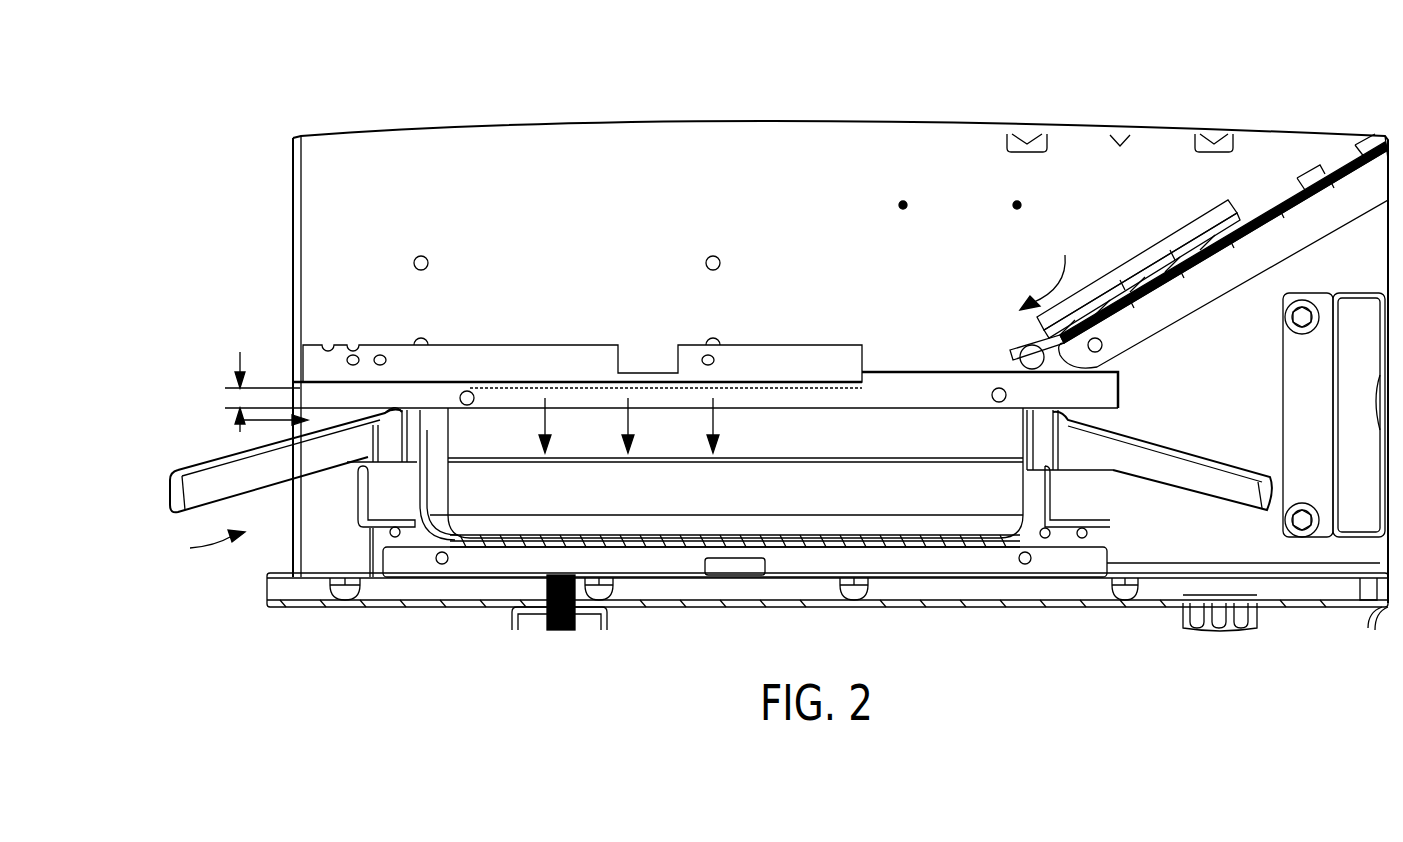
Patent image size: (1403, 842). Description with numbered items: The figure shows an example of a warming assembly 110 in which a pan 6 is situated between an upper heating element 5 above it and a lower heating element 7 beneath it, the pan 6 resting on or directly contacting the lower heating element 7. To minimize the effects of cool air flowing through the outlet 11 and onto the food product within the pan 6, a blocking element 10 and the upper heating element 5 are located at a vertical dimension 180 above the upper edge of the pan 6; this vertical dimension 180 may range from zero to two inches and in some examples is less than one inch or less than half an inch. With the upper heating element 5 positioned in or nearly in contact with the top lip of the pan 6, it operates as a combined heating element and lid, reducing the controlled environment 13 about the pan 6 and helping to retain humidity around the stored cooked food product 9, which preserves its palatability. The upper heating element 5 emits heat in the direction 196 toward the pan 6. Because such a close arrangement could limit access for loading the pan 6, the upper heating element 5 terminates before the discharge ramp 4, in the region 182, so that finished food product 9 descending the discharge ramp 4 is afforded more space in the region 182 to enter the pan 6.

The warming assembly 110 is at (190, 152).
The blocking element 10 is at (297, 262).
The upper heating element 5 is at (505, 355).
The vertical dimension 180 is at (240, 360).
The controlled environment 13 is at (240, 420).
The pan 6 is at (170, 500).
The outlet 11 is at (206, 547).
The direction 196 is at (625, 420).
The lower heating element 7 is at (400, 565).
The region 182 is at (1049, 263).
The cooked food product 9 is at (1190, 228).
The discharge ramp 4 is at (1268, 202).